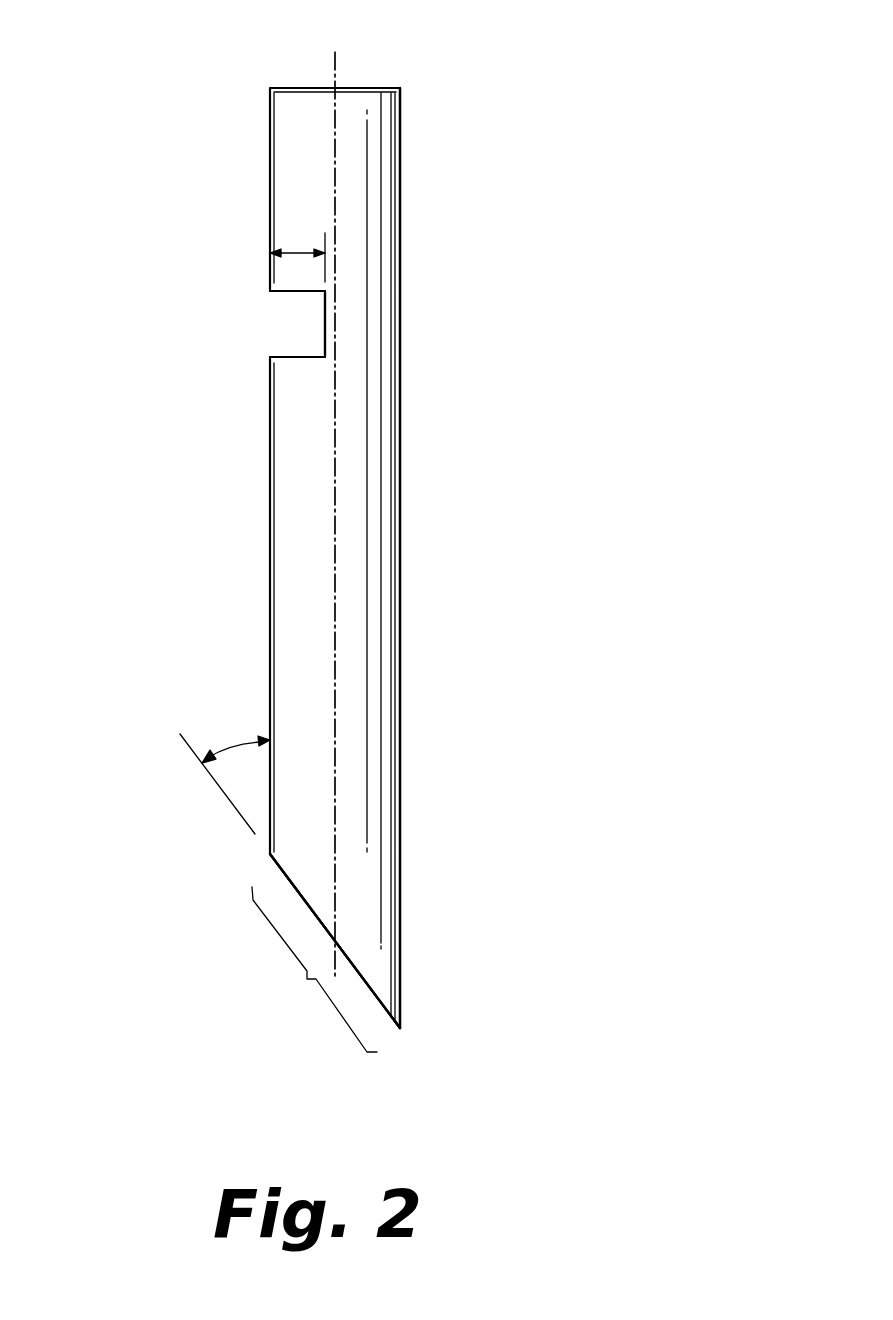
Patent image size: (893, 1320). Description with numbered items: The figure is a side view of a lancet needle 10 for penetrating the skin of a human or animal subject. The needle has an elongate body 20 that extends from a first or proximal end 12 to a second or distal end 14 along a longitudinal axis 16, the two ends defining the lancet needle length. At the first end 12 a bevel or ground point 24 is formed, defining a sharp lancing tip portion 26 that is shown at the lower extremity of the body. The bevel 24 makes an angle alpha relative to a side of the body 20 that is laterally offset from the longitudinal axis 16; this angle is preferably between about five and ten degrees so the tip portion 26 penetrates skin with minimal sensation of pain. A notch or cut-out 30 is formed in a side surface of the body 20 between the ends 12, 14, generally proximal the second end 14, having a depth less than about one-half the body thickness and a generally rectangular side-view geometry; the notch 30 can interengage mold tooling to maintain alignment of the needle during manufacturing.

The lancet needle 10 is at (172, 155).
The first end 12 is at (300, 1035).
The second end 14 is at (381, 52).
The longitudinal axis 16 is at (335, 157).
The elongate body 20 is at (352, 502).
The bevel 24 is at (290, 885).
The sharp lancing tip portion 26 is at (400, 1028).
The notch 30 is at (284, 325).